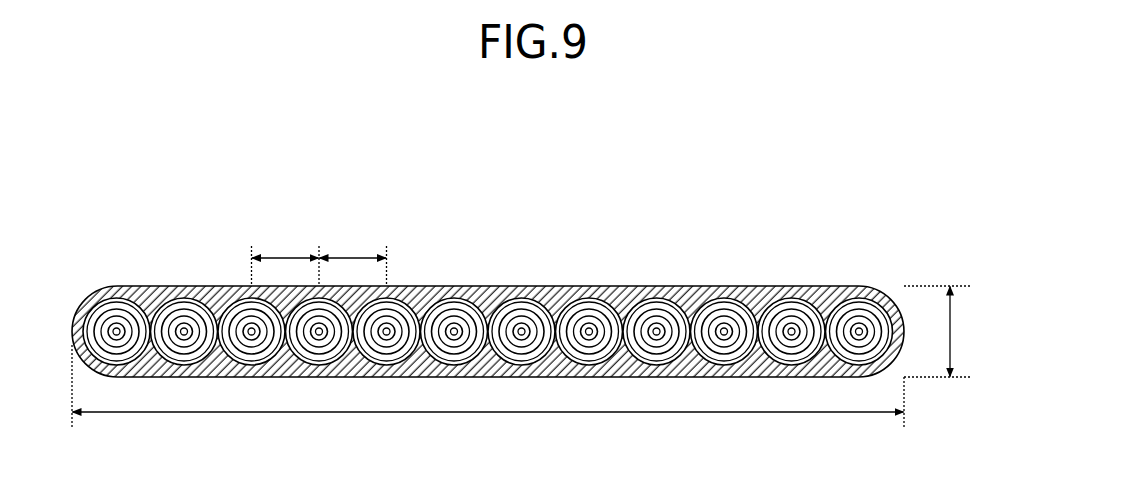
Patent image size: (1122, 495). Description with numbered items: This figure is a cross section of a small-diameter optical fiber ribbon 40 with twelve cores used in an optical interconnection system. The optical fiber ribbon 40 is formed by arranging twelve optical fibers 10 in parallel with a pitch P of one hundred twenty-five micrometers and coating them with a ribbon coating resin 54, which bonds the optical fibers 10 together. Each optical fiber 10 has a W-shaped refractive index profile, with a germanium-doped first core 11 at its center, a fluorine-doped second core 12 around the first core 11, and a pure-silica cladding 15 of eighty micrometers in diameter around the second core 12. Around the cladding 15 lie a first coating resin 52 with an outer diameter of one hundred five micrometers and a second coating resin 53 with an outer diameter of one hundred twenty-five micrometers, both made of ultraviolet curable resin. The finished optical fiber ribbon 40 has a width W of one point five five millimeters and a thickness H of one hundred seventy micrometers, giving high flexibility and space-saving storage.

The optical fiber ribbon 40 is at (590, 172).
The optical fiber 10 is at (465, 287).
The first core 11 is at (721, 350).
The second core 12 is at (730, 358).
The cladding 15 is at (739, 296).
The first coating resin 52 is at (722, 303).
The second coating resin 53 is at (714, 301).
The ribbon coating resin 54 is at (833, 293).